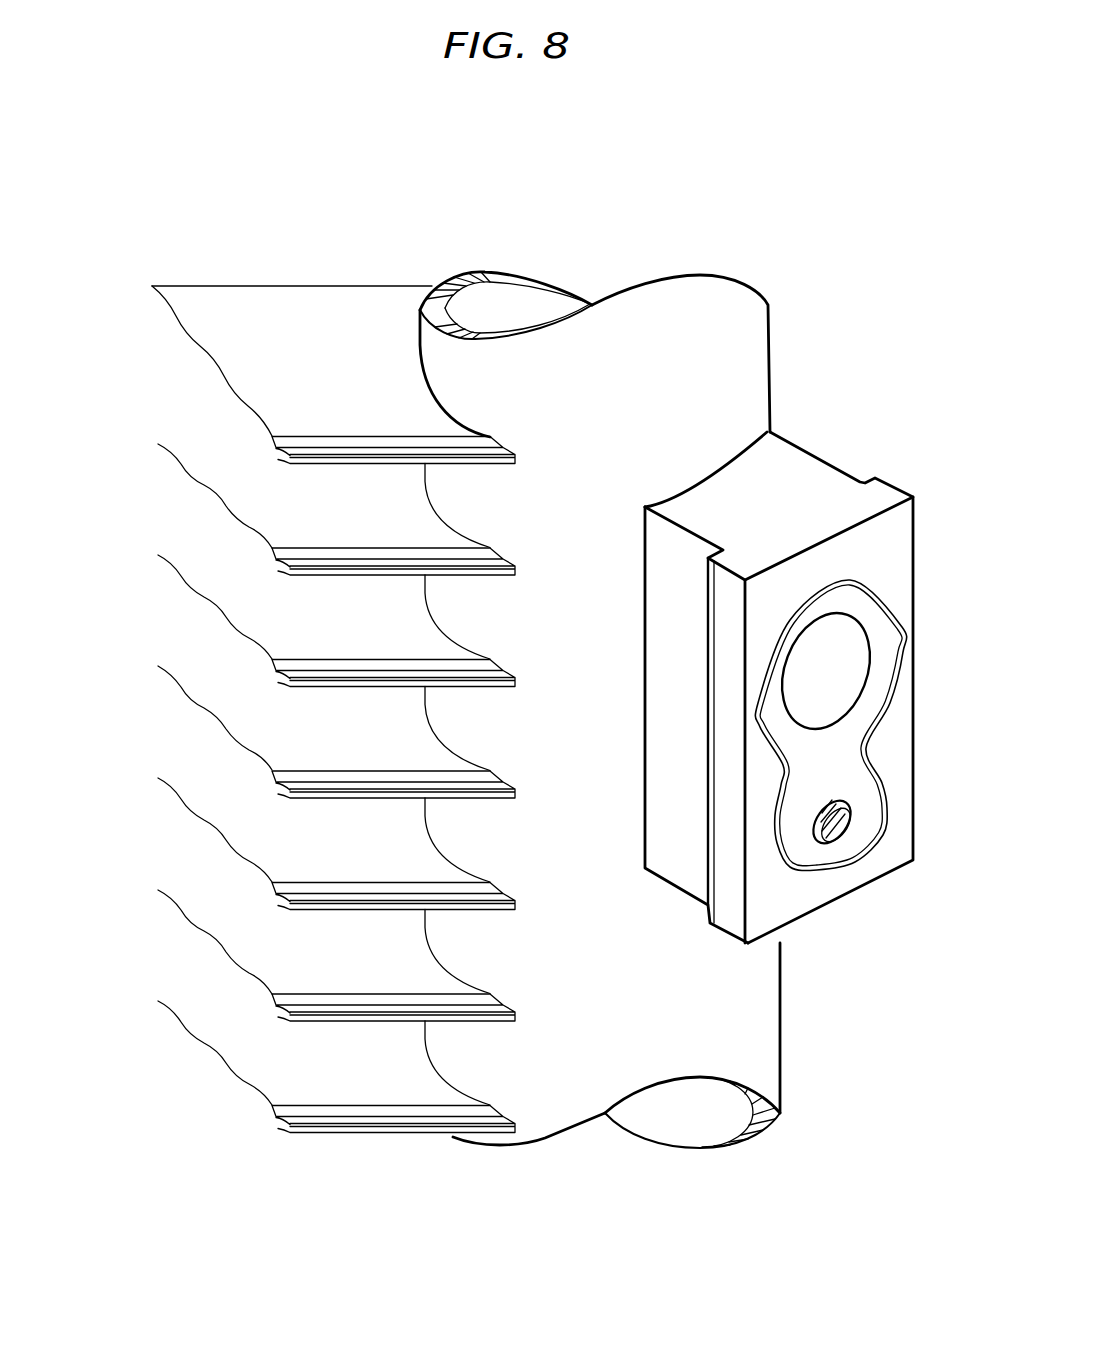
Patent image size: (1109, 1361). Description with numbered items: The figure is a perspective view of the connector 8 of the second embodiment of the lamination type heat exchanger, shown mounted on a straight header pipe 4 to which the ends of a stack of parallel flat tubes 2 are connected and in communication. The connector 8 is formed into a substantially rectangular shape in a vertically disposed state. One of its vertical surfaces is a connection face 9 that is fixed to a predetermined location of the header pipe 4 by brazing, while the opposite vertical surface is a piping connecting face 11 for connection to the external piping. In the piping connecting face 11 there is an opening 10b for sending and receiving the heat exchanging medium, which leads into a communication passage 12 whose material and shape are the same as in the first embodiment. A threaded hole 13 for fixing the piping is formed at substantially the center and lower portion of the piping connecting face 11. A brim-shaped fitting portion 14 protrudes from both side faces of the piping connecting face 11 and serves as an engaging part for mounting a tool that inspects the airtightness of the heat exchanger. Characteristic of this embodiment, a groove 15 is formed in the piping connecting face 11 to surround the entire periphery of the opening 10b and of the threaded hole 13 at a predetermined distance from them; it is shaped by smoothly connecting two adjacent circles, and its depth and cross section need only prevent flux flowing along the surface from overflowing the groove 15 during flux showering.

The flat tube 2 is at (327, 307).
The header pipe 4 is at (833, 308).
The connector 8 is at (898, 376).
The connection face 9 is at (716, 473).
The opening 10b is at (859, 628).
The piping connecting face 11 is at (882, 548).
The communication passage 12 is at (828, 687).
The threaded hole 13 is at (827, 845).
The fitting portion 14 is at (874, 483).
The groove 15 is at (883, 800).